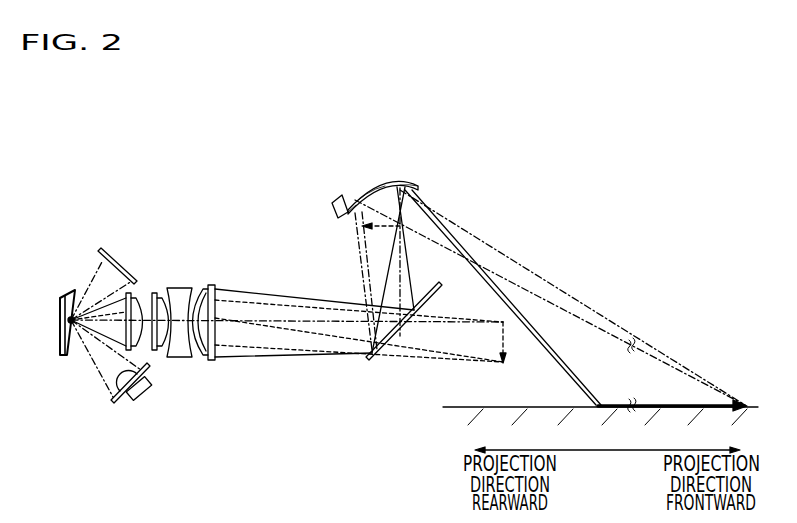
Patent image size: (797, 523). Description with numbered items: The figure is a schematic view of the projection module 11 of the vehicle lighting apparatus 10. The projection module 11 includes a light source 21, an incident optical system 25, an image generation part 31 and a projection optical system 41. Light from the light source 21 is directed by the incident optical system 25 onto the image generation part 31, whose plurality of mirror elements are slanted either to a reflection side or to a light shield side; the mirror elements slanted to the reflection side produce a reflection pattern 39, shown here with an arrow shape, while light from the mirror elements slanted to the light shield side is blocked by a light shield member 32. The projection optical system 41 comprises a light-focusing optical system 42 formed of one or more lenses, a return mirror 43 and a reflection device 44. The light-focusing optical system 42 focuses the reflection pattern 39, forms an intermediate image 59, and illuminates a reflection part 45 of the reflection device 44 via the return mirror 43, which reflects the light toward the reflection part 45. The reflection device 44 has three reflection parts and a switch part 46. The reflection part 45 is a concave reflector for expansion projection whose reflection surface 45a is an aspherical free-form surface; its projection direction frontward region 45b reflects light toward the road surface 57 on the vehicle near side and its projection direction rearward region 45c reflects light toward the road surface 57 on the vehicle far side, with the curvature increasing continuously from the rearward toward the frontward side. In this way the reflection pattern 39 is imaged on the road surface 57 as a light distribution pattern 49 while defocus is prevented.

The vehicle lighting apparatus 10 is at (537, 158).
The projection module 11 is at (548, 197).
The light source 21 is at (143, 398).
The incident optical system 25 is at (114, 398).
The image generation part 31 is at (61, 302).
The light shield member 32 is at (116, 263).
The reflection pattern 39 is at (71, 316).
The projection optical system 41 is at (216, 238).
The light-focusing optical system 42 is at (177, 276).
The return mirror 43 is at (384, 364).
The reflection device 44 is at (395, 170).
The reflection part 45 is at (374, 184).
The reflection surface 45a is at (361, 197).
The projection direction frontward region 45b is at (420, 194).
The projection direction rearward region 45c is at (355, 217).
The switch part 46 is at (333, 211).
The light distribution pattern 49 is at (681, 405).
The road surface 57 is at (493, 406).
The intermediate image 59 is at (373, 230).